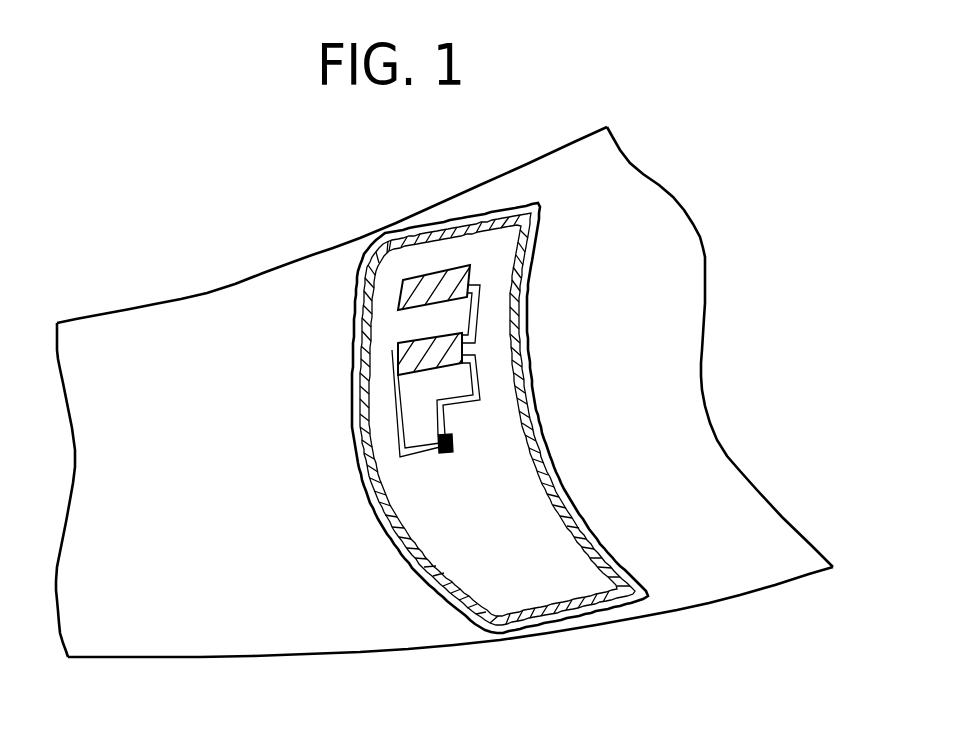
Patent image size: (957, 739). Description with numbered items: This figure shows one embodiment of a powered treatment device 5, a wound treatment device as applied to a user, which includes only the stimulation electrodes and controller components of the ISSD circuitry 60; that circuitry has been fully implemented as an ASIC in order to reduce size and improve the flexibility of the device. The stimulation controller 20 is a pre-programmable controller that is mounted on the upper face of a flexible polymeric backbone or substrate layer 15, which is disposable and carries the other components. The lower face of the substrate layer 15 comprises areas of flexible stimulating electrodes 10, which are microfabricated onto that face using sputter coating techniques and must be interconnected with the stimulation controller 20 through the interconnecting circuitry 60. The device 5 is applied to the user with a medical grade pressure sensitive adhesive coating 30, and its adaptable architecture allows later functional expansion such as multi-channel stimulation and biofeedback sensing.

The powered treatment device 5 is at (352, 240).
The stimulation electrodes 10 is at (387, 303).
The substrate layer 15 is at (476, 551).
The stimulation controller 20 is at (476, 438).
The pressure sensitive adhesive coating 30 is at (532, 286).
The ISSD circuitry 60 is at (422, 440).